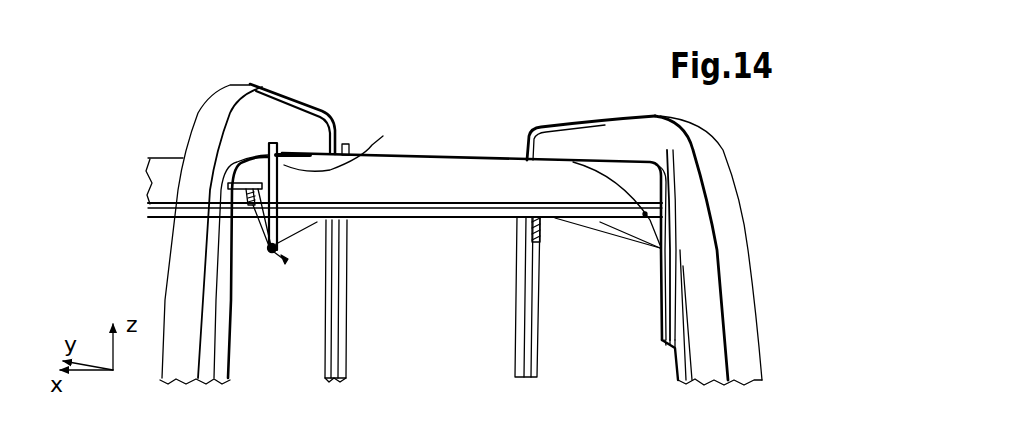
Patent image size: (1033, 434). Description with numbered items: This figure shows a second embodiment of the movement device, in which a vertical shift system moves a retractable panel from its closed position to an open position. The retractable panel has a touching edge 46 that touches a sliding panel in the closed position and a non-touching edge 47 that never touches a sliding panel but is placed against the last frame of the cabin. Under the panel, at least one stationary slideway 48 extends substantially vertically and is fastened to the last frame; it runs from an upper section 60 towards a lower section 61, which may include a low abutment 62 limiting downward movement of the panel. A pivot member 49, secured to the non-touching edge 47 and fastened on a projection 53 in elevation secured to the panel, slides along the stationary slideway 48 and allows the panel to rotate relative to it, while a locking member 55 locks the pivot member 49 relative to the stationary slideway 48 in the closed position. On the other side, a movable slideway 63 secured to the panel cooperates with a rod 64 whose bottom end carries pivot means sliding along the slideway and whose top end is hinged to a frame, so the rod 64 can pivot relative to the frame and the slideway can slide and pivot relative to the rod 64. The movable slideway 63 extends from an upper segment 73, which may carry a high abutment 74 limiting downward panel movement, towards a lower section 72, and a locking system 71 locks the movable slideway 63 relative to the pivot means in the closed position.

The touching edge 46 is at (349, 143).
The non-touching edge 47 is at (630, 168).
The upper section 60 is at (681, 248).
The locking member 55 is at (670, 231).
The projection 53 is at (657, 248).
The pivot member 49 is at (652, 254).
The stationary slideway 48 is at (662, 331).
The lower section 61 is at (680, 338).
The low abutment 62 is at (660, 348).
The rod 64 is at (268, 244).
The movable slideway 63 is at (288, 157).
The upper segment 73 is at (273, 143).
The high abutment 74 is at (229, 183).
The lower section 72 is at (270, 249).
The locking system 71 is at (286, 262).